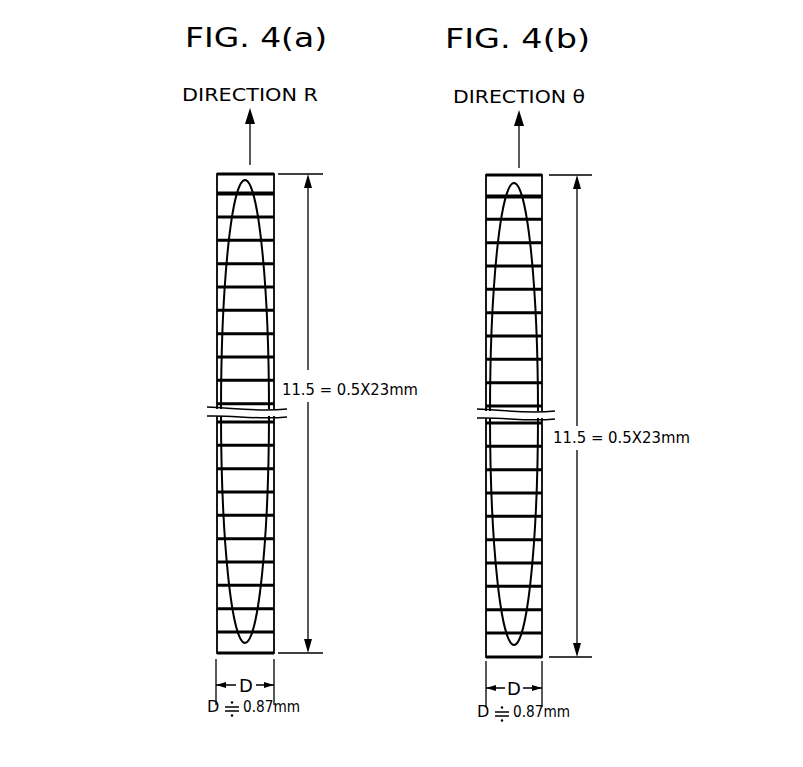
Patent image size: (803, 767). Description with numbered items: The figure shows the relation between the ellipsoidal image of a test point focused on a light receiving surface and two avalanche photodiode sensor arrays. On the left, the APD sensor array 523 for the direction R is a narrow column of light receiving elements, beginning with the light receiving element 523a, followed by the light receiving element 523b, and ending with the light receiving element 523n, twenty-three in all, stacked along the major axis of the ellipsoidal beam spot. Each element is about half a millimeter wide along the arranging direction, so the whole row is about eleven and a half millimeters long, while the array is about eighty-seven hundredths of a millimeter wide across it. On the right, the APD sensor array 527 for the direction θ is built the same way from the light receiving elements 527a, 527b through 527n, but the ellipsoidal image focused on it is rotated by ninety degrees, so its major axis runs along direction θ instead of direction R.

The APD sensor array 523 is at (178, 405).
The light receiving element 523a is at (216, 180).
The light receiving element 523b is at (218, 210).
The light receiving element 523n is at (216, 650).
The APD sensor array 527 is at (550, 407).
The light receiving element 527a is at (487, 180).
The light receiving element 527b is at (487, 210).
The light receiving element 527n is at (488, 650).